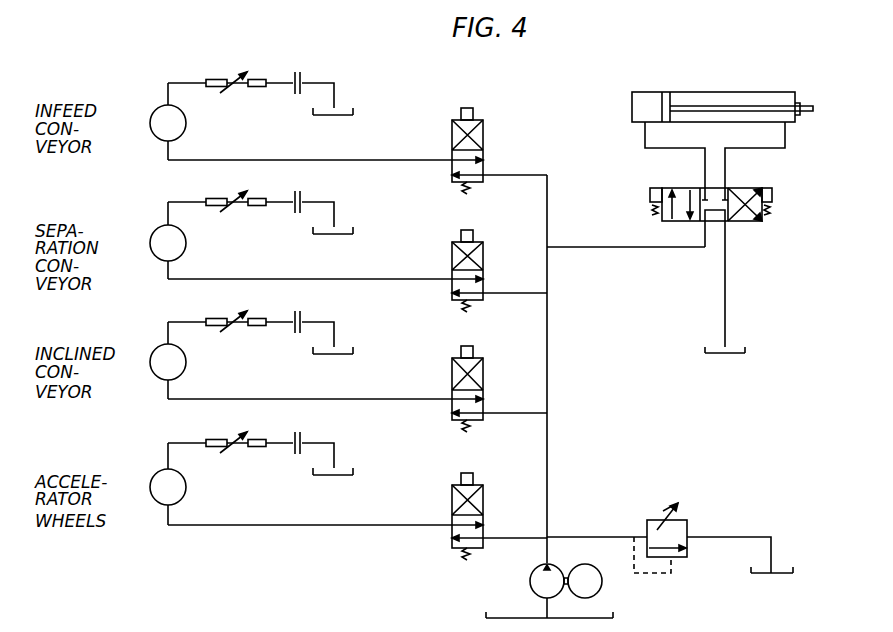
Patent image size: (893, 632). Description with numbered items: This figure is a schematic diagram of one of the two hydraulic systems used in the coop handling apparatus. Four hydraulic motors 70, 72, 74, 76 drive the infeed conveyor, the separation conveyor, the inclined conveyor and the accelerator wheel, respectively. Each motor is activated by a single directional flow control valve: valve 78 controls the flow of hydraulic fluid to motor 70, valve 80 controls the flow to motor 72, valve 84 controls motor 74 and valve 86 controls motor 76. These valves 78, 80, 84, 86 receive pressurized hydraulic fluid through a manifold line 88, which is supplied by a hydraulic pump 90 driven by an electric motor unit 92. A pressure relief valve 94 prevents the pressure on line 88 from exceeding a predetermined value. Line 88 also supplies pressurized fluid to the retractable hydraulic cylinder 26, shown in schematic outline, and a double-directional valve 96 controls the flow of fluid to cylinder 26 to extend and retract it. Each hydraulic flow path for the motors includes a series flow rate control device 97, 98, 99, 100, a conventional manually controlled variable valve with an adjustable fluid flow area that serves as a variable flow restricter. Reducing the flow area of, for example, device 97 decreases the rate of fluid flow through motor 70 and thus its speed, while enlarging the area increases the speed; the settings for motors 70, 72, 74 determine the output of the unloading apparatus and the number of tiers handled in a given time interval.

The retractable hydraulic cylinder 26 is at (723, 92).
The hydraulic motor 70 is at (186, 123).
The hydraulic motor 72 is at (186, 243).
The hydraulic motor 74 is at (186, 362).
The hydraulic motor 76 is at (186, 487).
The directional flow control valve 78 is at (485, 147).
The directional flow control valve 80 is at (485, 271).
The directional flow control valve 84 is at (485, 388).
The directional flow control valve 86 is at (485, 516).
The manifold line 88 is at (548, 390).
The hydraulic pump 90 is at (529, 587).
The electric motor unit 92 is at (603, 588).
The pressure relief valve 94 is at (690, 527).
The double-directional valve 96 is at (678, 187).
The flow rate control device 97 is at (238, 73).
The flow rate control device 98 is at (238, 192).
The flow rate control device 99 is at (238, 312).
The flow rate control device 100 is at (238, 433).